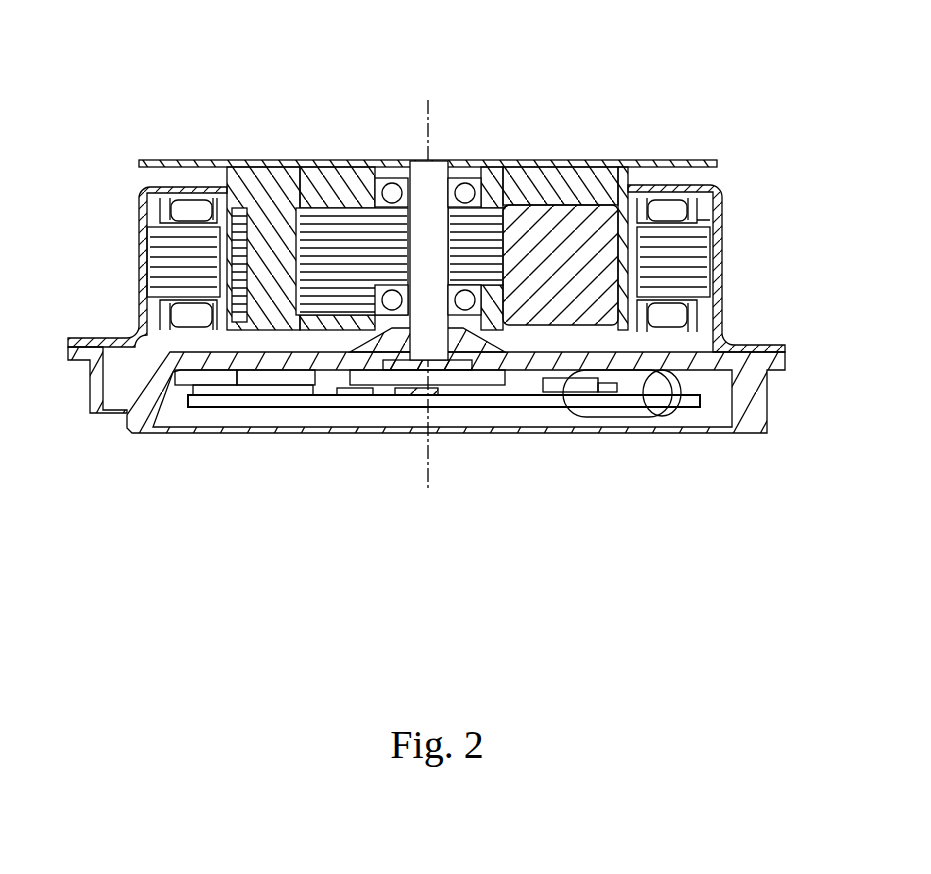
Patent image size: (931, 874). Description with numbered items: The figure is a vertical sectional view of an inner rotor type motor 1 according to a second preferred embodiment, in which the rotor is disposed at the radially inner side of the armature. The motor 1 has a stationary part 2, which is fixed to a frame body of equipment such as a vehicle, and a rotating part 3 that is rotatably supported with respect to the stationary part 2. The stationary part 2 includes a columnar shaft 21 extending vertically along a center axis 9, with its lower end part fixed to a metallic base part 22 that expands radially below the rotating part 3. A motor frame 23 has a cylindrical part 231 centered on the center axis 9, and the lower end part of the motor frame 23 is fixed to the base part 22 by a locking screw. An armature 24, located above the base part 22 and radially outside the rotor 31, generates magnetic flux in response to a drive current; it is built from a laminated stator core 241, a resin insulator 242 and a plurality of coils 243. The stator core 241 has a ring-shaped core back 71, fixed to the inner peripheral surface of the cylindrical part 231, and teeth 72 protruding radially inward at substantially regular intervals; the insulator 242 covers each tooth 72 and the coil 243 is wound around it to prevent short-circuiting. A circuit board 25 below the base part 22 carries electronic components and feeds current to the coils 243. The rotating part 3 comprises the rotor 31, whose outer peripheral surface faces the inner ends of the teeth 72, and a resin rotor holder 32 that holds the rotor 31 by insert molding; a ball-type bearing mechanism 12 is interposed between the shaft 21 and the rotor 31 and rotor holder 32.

The motor 1 is at (663, 96).
The stationary part 2 is at (247, 440).
The rotating part 3 is at (252, 152).
The center axis 9 is at (428, 112).
The bearing mechanism 12 is at (392, 177).
The shaft 21 is at (438, 160).
The base part 22 is at (753, 393).
The motor frame 23 is at (720, 340).
The cylindrical part 231 is at (147, 288).
The armature 24 is at (790, 203).
The stator core 241 is at (676, 261).
The insulator 242 is at (697, 217).
The coil 243 is at (675, 203).
The circuit board 25 is at (513, 400).
The rotor 31 is at (513, 196).
The rotor holder 32 is at (307, 160).
The core back 71 is at (157, 237).
The teeth 72 is at (160, 260).